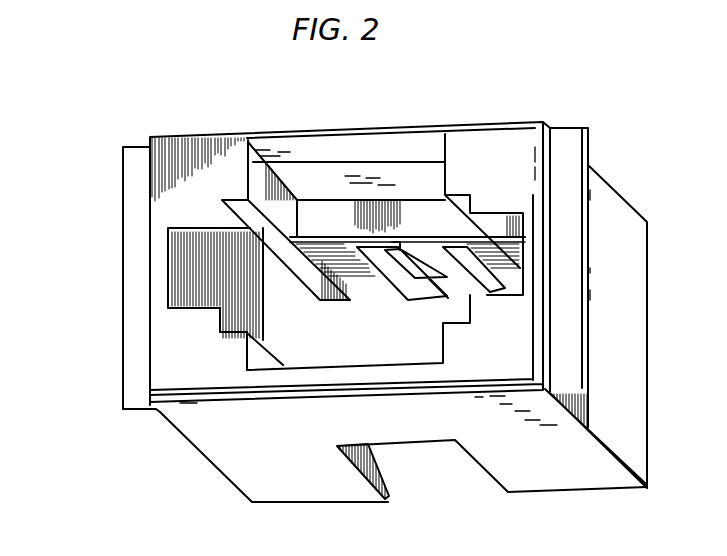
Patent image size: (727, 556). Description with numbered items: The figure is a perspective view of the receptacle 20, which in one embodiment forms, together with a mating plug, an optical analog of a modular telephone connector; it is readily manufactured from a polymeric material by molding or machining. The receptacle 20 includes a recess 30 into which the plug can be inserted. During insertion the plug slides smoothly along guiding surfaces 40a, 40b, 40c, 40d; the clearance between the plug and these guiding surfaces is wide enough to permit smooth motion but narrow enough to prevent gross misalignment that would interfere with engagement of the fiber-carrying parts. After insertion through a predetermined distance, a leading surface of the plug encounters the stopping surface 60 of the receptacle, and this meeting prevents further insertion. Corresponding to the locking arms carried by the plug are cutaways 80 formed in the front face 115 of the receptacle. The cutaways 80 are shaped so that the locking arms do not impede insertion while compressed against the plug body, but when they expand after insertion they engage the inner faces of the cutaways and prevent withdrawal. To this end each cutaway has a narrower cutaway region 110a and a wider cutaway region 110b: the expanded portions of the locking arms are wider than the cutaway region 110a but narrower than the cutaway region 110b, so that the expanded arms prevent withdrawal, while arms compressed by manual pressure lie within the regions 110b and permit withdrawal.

The receptacle 20 is at (60, 132).
The recess 30 is at (402, 327).
The guiding surface 40a is at (257, 357).
The guiding surface 40b is at (267, 197).
The guiding surface 40c is at (353, 362).
The guiding surface 40d is at (390, 174).
The stopping surface 60 is at (385, 215).
The cutaways 80 is at (200, 268).
The cutaway region 110a is at (200, 308).
The cutaway region 110b is at (237, 327).
The front face 115 is at (197, 160).